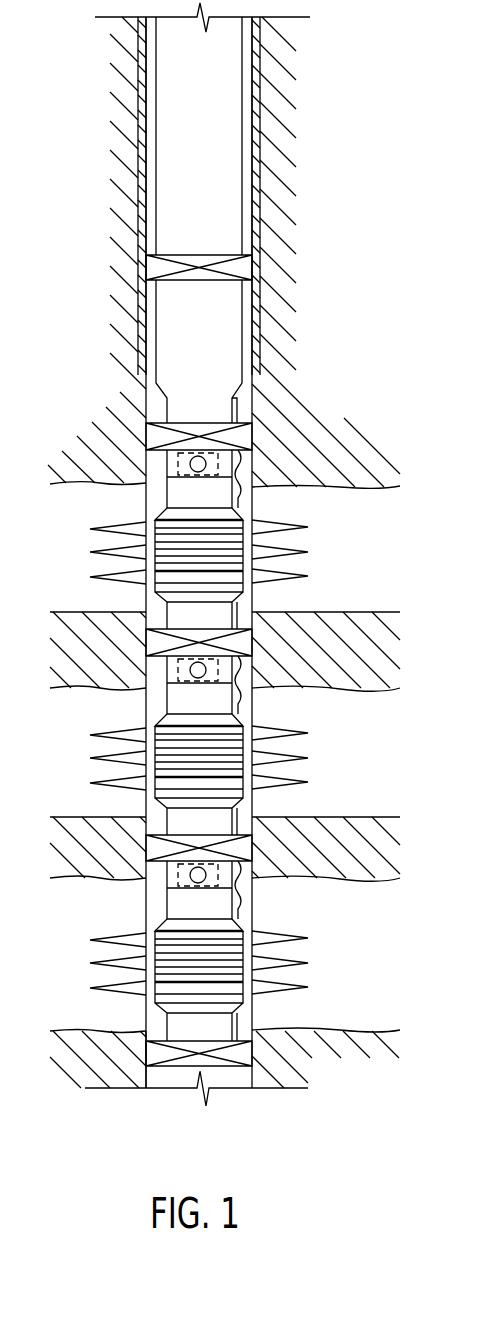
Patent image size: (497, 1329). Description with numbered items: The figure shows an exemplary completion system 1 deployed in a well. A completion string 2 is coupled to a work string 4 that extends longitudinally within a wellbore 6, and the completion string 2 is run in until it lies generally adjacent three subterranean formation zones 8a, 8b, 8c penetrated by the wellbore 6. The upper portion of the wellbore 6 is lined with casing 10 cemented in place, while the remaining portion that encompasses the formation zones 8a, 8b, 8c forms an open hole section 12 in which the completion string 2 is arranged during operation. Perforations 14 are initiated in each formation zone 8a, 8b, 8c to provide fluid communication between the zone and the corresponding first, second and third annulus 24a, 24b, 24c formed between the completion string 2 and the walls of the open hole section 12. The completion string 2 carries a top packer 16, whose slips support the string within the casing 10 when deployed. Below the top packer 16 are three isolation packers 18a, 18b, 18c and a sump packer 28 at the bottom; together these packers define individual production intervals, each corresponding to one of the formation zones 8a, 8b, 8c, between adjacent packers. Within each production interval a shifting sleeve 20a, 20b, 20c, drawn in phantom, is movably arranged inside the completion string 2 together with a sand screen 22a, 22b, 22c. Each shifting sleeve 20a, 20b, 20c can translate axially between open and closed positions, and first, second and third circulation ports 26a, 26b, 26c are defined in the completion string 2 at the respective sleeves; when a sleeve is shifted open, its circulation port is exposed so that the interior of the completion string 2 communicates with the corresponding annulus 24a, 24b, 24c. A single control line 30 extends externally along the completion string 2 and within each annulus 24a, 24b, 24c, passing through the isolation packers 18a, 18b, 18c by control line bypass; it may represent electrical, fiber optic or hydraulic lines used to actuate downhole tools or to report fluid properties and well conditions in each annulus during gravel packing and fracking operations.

The completion system 1 is at (72, 406).
The completion string 2 is at (243, 333).
The work string 4 is at (242, 75).
The wellbore 6 is at (151, 107).
The first formation zone 8a is at (378, 544).
The second formation zone 8b is at (378, 762).
The third formation zone 8c is at (372, 956).
The casing 10 is at (262, 190).
The open hole section 12 is at (248, 403).
The perforations 14 is at (90, 577).
The top packer 16 is at (262, 270).
The first isolation packer 18a is at (250, 428).
The second isolation packer 18b is at (250, 640).
The third isolation packer 18c is at (250, 845).
The first shifting sleeve 20a is at (220, 464).
The second shifting sleeve 20b is at (220, 669).
The third shifting sleeve 20c is at (222, 882).
The first sand screen 22a is at (237, 558).
The second sand screen 22b is at (232, 775).
The third sand screen 22c is at (236, 968).
The first annulus 24a is at (150, 604).
The second annulus 24b is at (150, 810).
The third annulus 24c is at (150, 1024).
The first circulation port 26a is at (188, 468).
The second circulation port 26b is at (188, 674).
The third circulation port 26c is at (188, 879).
The sump packer 28 is at (220, 1045).
The control line 30 is at (250, 388).